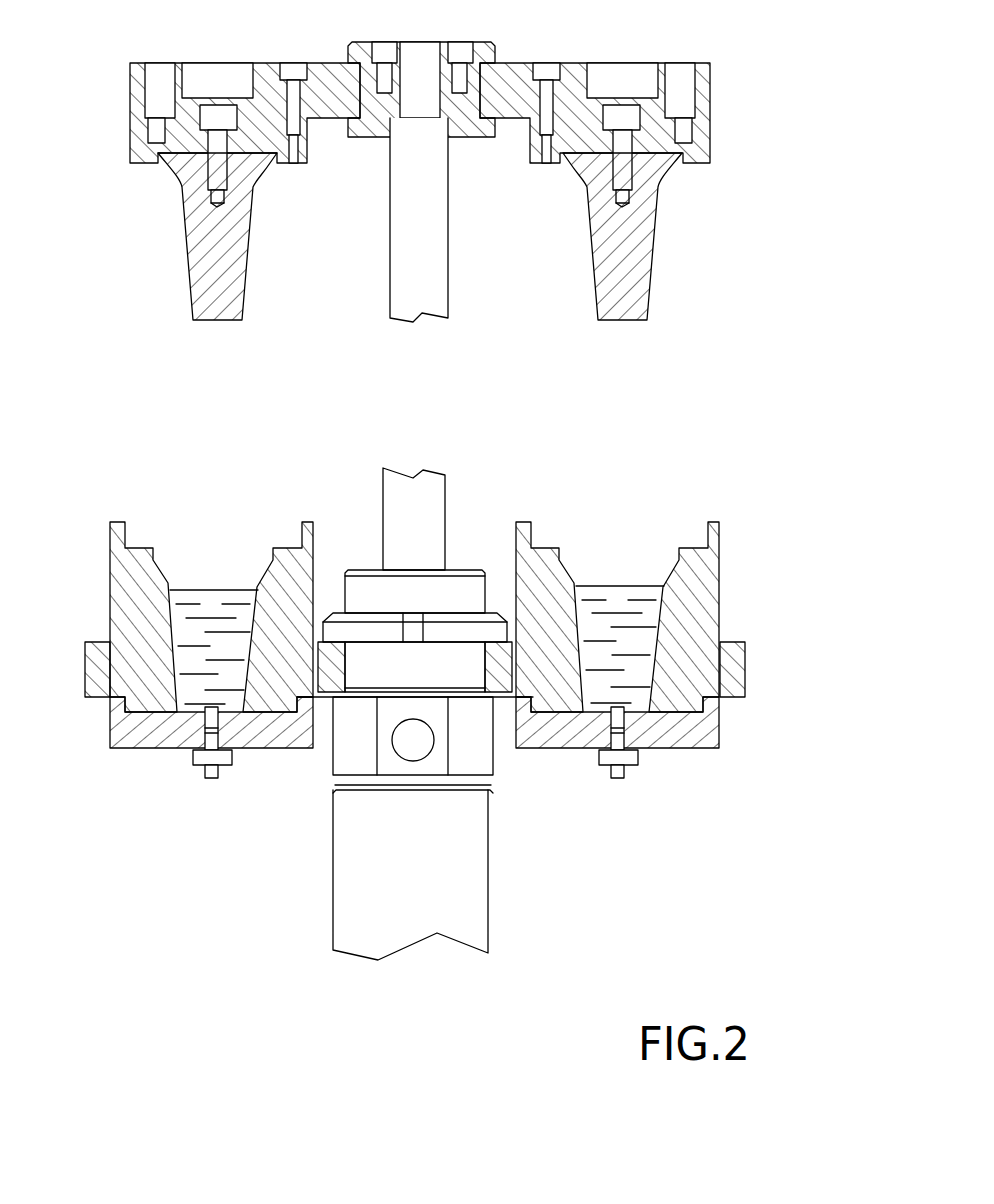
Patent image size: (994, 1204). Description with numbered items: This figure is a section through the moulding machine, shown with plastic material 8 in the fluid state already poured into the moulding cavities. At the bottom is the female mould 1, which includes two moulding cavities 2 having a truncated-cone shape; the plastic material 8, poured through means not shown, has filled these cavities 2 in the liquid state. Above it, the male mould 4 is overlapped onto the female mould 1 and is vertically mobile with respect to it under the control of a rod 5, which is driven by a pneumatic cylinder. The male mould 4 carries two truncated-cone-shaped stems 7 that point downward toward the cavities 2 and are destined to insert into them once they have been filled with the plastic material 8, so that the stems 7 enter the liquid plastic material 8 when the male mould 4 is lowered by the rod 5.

The female mould 1 is at (755, 603).
The moulding cavity 2 is at (205, 568).
The male mould 4 is at (750, 133).
The rod 5 is at (422, 265).
The truncated-cone shaped stem 7 is at (202, 232).
The plastic material 8 is at (187, 625).